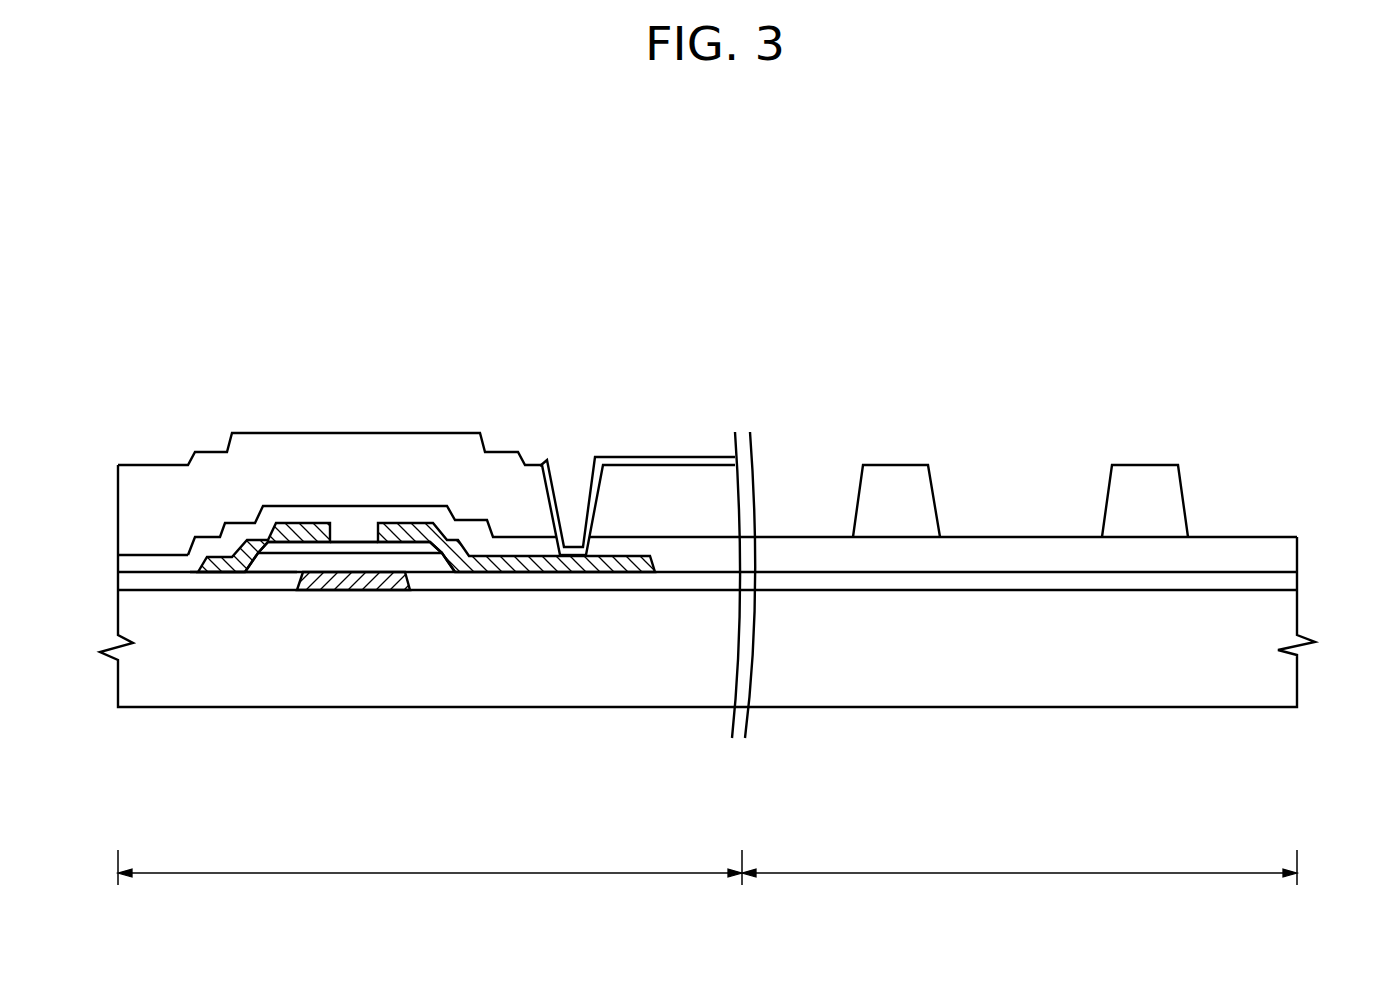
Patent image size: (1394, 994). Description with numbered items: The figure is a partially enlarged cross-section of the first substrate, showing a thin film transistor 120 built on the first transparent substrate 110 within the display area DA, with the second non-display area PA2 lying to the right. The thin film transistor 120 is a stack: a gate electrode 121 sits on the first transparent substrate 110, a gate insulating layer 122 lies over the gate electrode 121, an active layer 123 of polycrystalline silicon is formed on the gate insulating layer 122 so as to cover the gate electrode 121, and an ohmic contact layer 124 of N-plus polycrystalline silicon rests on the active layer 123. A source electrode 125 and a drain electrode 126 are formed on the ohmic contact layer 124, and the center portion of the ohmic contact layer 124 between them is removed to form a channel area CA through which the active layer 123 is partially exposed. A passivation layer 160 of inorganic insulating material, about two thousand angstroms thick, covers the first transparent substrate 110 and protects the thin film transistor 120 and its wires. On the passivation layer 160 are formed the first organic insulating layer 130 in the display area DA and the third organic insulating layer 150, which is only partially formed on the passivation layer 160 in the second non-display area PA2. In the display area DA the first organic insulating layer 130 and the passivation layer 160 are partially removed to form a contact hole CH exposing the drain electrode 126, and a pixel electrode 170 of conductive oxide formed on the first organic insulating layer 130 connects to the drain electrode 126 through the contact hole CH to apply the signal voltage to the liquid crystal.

The first transparent substrate 110 is at (1285, 613).
The thin film transistor 120 is at (422, 602).
The gate electrode 121 is at (346, 586).
The gate insulating layer 122 is at (277, 576).
The active layer 123 is at (433, 566).
The ohmic contact layer 124 is at (445, 563).
The source electrode 125 is at (218, 566).
The drain electrode 126 is at (554, 572).
The first organic insulating layer 130 is at (125, 509).
The third organic insulating layer 150 is at (1177, 498).
The passivation layer 160 is at (678, 565).
The pixel electrode 170 is at (650, 457).
The channel area CA is at (361, 527).
The contact hole CH is at (569, 480).
The display area DA is at (430, 865).
The second non-display area PA2 is at (1019, 865).